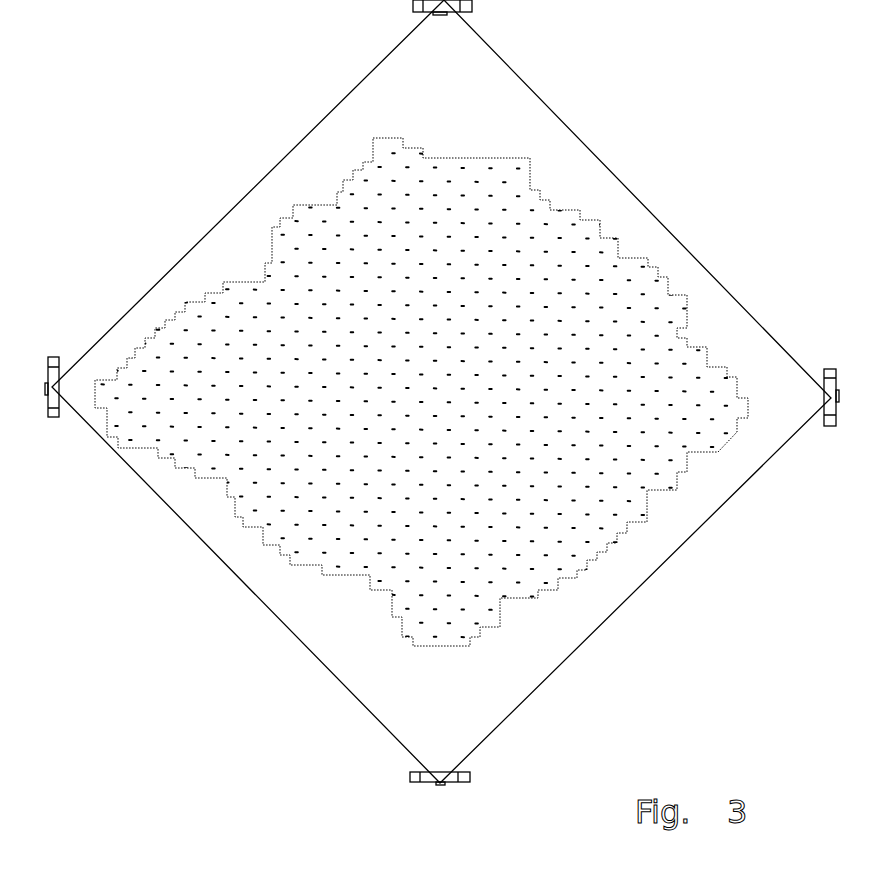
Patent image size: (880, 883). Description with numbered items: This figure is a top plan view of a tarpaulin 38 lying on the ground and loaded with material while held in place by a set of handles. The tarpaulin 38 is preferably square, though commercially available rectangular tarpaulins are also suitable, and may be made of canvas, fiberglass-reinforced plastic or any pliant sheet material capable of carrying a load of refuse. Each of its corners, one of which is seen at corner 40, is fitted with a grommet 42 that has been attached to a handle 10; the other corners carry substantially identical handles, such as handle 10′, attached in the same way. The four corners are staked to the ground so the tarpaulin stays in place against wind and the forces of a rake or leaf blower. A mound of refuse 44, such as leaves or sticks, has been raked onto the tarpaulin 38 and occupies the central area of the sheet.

The handle 10 is at (462, 788).
The handle 10′ is at (62, 358).
The tarpaulin 38 is at (535, 660).
The corner 40 is at (401, 688).
The grommet 42 is at (440, 785).
The mound of refuse 44 is at (350, 525).